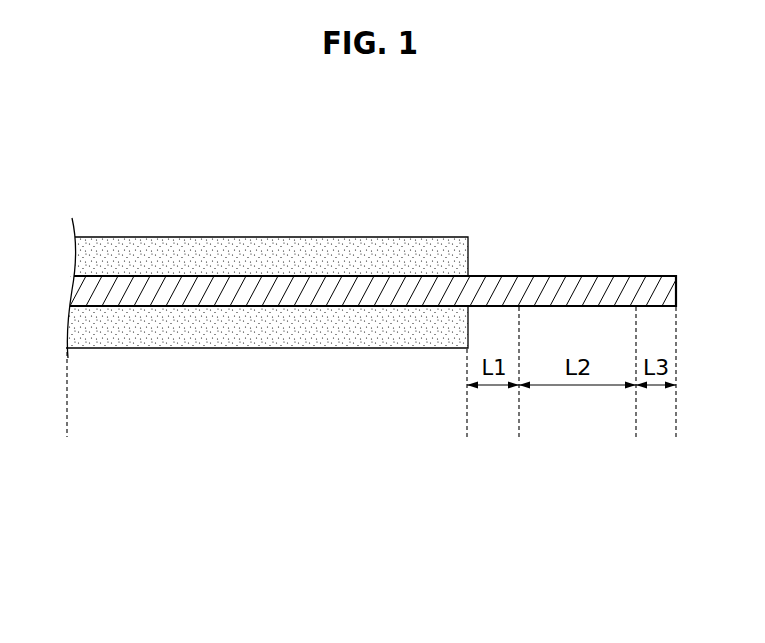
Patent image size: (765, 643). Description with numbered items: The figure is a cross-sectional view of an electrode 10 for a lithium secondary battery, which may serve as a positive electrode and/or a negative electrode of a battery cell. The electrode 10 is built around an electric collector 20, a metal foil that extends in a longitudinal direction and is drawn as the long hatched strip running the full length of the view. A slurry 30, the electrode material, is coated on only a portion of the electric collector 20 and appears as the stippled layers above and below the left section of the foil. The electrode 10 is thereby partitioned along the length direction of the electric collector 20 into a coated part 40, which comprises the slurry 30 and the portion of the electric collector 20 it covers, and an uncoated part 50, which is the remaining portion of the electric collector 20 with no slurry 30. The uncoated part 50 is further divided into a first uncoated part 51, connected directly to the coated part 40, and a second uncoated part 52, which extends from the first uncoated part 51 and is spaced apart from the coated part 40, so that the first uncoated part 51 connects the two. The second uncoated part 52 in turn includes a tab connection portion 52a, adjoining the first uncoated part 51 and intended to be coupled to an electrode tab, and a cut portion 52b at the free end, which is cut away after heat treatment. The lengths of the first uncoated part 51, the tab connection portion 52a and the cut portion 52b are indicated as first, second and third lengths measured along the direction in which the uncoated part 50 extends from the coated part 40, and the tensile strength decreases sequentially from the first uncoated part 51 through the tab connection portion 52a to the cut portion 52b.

The electrode 10 is at (98, 156).
The electric collector 20 is at (199, 288).
The slurry 30 is at (318, 255).
The coated part 40 is at (67, 433).
The uncoated part 50 is at (349, 580).
The first uncoated part 51 is at (467, 433).
The second uncoated part 52 is at (209, 580).
The tab connection portion 52a is at (519, 433).
The cut portion 52b is at (636, 433).